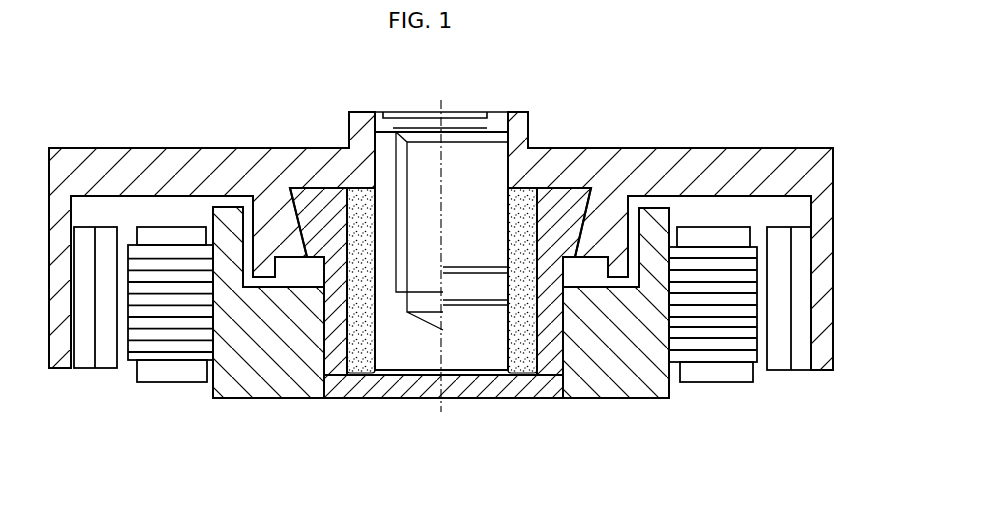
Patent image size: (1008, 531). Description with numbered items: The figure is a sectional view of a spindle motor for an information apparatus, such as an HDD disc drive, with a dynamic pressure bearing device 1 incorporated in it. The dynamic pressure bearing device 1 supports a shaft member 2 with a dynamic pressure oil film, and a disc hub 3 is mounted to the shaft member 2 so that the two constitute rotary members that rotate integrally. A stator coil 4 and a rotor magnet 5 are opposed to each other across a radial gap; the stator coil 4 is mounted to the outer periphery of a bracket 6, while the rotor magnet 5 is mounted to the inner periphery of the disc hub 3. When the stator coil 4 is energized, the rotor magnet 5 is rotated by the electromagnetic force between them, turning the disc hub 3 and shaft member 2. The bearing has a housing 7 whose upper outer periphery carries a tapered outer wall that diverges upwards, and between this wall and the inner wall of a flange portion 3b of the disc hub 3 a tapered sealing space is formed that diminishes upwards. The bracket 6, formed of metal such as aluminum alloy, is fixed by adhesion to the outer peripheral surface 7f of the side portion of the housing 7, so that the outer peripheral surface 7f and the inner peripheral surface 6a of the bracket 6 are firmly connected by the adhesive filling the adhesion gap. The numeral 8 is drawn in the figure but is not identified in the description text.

The dynamic pressure bearing device 1 is at (527, 179).
The shaft member 2 is at (510, 146).
The disc hub 3 is at (211, 162).
The flange portion 3b is at (263, 270).
The stator coil 4 is at (718, 353).
The rotor magnet 5 is at (784, 362).
The bracket 6 is at (630, 398).
The inner peripheral surface 6a is at (549, 396).
The housing 7 is at (320, 205).
The outer peripheral surface 7f is at (322, 365).
The bearing sleeve 8 is at (591, 198).